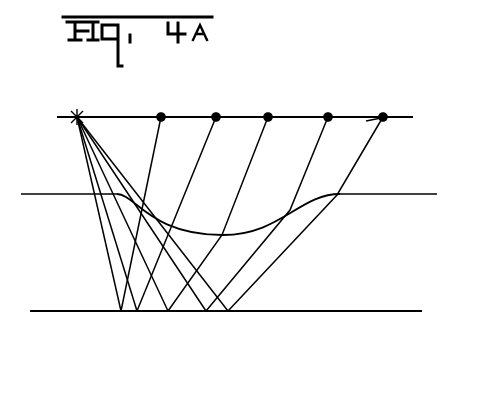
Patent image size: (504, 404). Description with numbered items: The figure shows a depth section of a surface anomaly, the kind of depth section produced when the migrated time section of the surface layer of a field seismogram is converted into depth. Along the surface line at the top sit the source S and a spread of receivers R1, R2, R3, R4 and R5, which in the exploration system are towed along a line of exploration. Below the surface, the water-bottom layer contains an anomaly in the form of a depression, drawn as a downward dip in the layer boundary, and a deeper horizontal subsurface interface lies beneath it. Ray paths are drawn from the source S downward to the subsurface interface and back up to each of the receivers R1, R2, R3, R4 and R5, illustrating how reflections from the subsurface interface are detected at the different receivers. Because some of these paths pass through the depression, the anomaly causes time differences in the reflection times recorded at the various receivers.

The source S is at (73, 105).
The receiver R1 is at (146, 198).
The receiver R2 is at (181, 198).
The receiver R3 is at (223, 198).
The receiver R4 is at (272, 198).
The receiver R5 is at (310, 198).